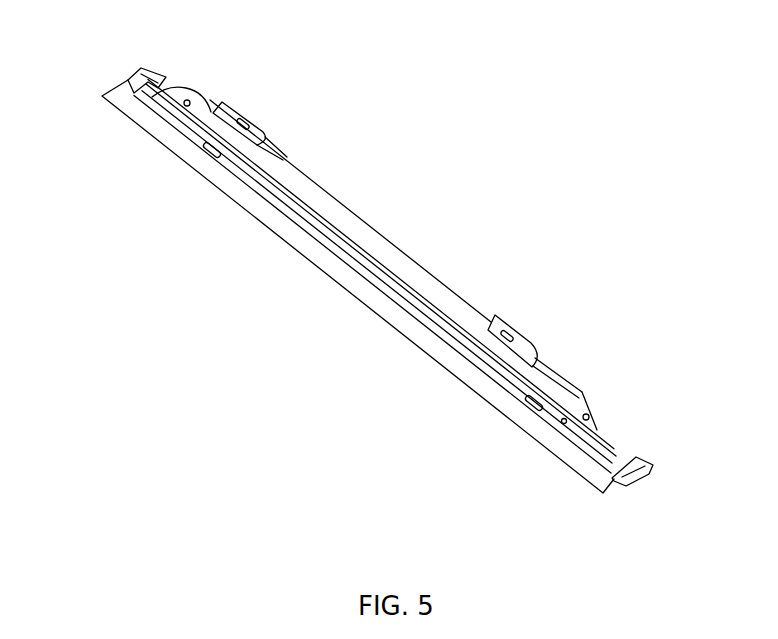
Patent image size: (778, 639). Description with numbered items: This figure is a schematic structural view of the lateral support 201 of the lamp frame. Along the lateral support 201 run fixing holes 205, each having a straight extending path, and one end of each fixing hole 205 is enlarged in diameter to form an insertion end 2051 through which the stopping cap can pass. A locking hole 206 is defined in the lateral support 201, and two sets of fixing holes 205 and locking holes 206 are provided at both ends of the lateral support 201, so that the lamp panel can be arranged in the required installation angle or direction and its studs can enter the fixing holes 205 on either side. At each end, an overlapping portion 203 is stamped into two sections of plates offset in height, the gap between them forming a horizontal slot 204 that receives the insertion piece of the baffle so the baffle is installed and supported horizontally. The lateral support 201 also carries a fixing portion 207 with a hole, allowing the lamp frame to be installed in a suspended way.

The lateral support 201 is at (407, 197).
The overlapping portion 203 is at (130, 80).
The slot 204 is at (638, 462).
The fixing hole 205 is at (177, 123).
The insertion end 2051 is at (218, 157).
The locking hole 206 is at (210, 108).
The fixing portion 207 is at (517, 327).